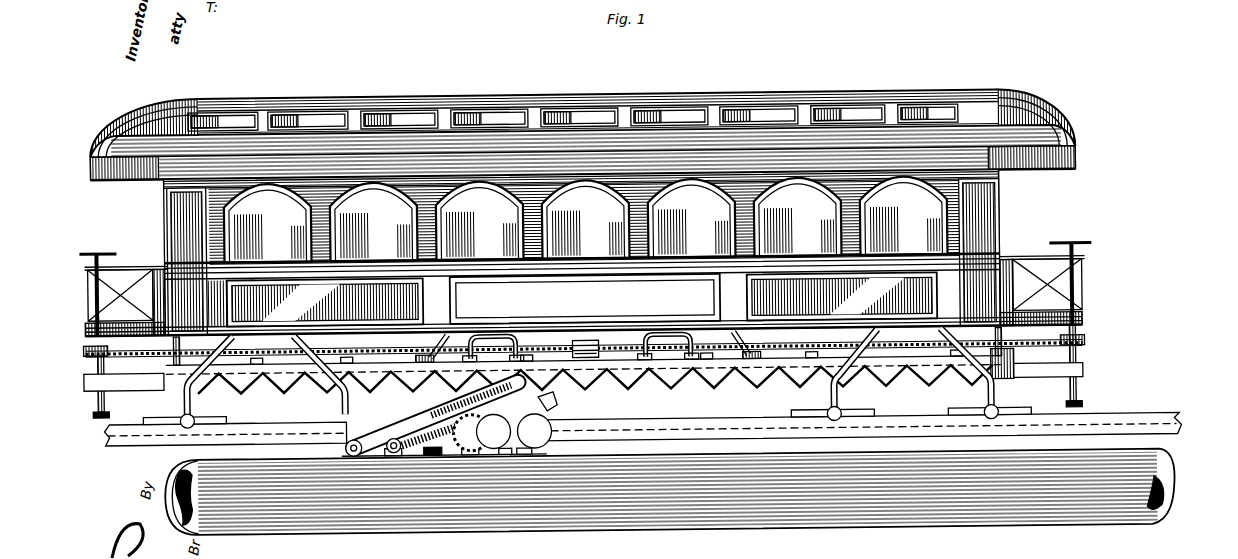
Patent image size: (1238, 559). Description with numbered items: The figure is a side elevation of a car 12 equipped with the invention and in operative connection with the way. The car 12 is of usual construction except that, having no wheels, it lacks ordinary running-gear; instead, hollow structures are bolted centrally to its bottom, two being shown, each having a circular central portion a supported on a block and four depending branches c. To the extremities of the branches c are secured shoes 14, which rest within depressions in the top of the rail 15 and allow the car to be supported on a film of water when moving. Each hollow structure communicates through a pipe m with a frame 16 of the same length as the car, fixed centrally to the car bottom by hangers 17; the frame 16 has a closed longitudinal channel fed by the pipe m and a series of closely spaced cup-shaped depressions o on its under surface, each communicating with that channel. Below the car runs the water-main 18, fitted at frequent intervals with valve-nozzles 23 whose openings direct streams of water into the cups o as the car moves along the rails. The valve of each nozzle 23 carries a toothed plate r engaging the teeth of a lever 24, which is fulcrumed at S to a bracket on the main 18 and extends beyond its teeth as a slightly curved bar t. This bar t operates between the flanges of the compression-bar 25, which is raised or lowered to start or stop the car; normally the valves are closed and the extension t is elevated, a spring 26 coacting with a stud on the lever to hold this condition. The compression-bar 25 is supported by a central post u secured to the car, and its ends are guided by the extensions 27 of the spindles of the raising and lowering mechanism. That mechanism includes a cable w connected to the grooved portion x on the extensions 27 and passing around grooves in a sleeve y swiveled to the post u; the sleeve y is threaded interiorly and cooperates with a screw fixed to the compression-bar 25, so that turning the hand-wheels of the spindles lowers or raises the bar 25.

The car 12 is at (586, 135).
The shoes 14 is at (148, 418).
The rail 15 is at (1180, 425).
The frame 16 is at (1024, 362).
The hangers 17 is at (432, 330).
The water-main 18 is at (1173, 477).
The valve-nozzles 23 is at (554, 405).
The lever 24 is at (415, 413).
The compression-bar 25 is at (1083, 368).
The spring 26 is at (445, 450).
The extensions 27 is at (1088, 397).
The circular central portion a is at (262, 344).
The depending branches c is at (190, 398).
The pipe m is at (490, 336).
The cup-shaped depressions o is at (318, 383).
The toothed plate r is at (481, 432).
The fulcrum S is at (346, 452).
The curved bar t is at (541, 415).
The central post u is at (585, 339).
The cable w is at (124, 370).
The grooved portion x is at (1100, 340).
The sleeve y is at (1097, 283).